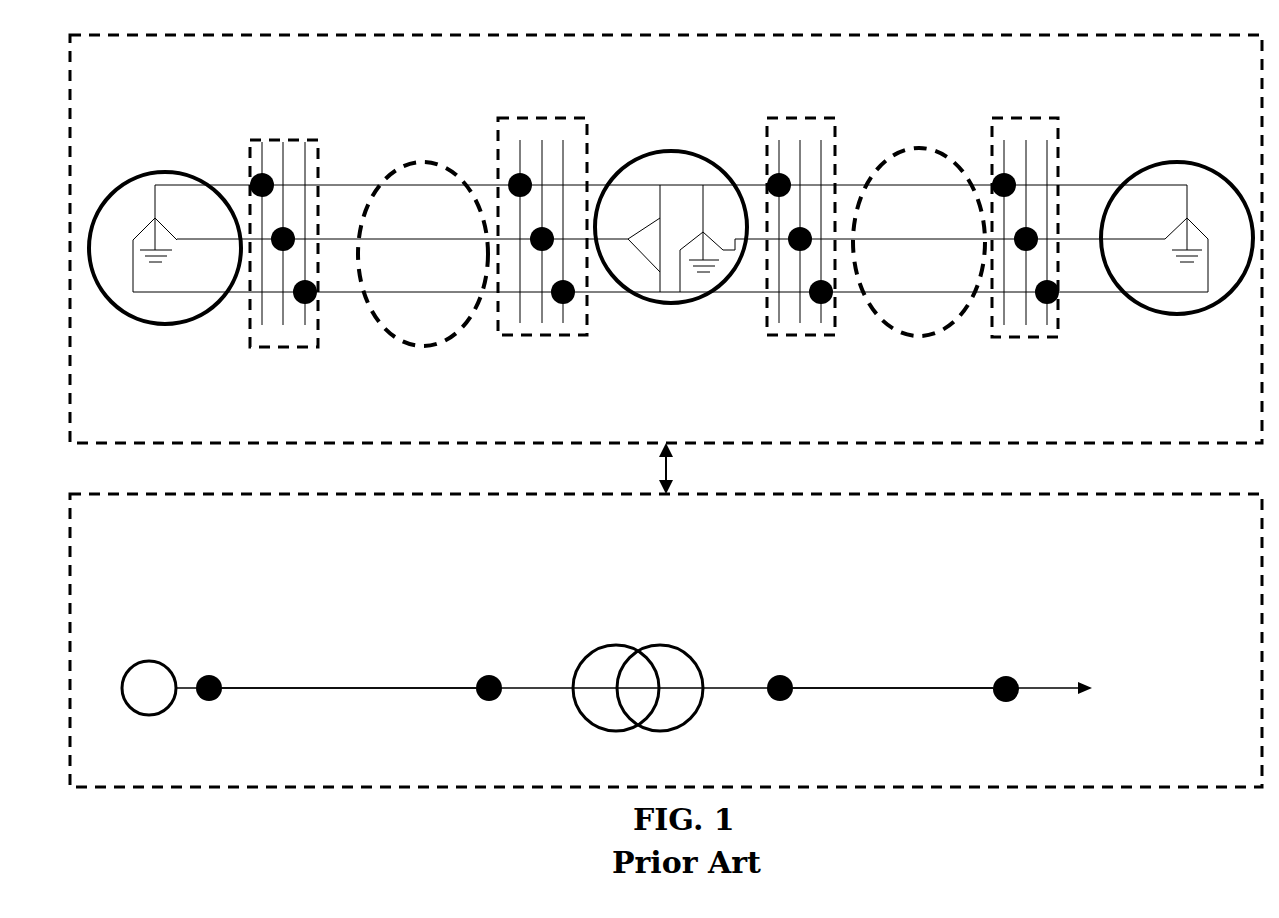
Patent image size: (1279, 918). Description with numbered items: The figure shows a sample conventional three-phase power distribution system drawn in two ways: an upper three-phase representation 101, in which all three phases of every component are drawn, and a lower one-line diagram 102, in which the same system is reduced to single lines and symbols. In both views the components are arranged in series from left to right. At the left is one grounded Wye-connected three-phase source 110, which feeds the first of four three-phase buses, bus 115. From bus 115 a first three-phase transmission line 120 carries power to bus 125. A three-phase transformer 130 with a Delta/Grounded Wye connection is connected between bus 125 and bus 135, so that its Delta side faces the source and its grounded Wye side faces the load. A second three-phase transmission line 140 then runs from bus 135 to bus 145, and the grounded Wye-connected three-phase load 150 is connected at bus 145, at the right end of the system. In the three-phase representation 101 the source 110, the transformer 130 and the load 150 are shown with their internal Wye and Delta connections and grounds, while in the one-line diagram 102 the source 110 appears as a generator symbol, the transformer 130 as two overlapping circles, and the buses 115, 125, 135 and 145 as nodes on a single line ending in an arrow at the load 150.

The three-phase representation 101 is at (1245, 442).
The one-line diagram 102 is at (1235, 788).
The grounded Wye-connected three-phase source 110 is at (145, 655).
The bus 115 is at (296, 347).
The three-phase transmission line 120 is at (306, 688).
The bus 125 is at (565, 334).
The three-phase transformer 130 is at (628, 640).
The bus 135 is at (820, 334).
The three-phase transmission line 140 is at (855, 688).
The bus 145 is at (1035, 336).
The grounded Wye-connected three-phase load 150 is at (1037, 688).